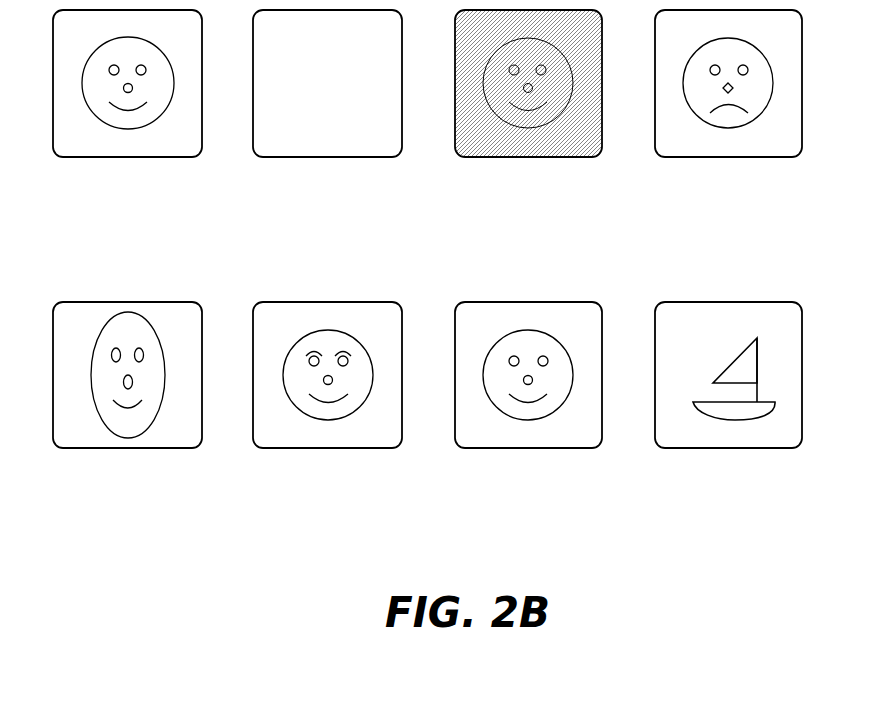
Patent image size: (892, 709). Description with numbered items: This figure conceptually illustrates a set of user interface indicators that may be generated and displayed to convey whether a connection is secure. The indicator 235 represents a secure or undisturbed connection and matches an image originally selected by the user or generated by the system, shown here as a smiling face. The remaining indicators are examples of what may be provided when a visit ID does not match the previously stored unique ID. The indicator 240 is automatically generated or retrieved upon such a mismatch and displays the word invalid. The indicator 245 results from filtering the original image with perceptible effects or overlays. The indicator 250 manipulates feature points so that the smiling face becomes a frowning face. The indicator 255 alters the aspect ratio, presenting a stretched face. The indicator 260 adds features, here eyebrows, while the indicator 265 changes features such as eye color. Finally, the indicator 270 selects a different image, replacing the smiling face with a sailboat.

The indicator 235 is at (72, 157).
The indicator 240 is at (272, 157).
The indicator 245 is at (472, 157).
The indicator 250 is at (672, 157).
The indicator 255 is at (72, 448).
The indicator 260 is at (272, 448).
The indicator 265 is at (472, 448).
The indicator 270 is at (672, 448).